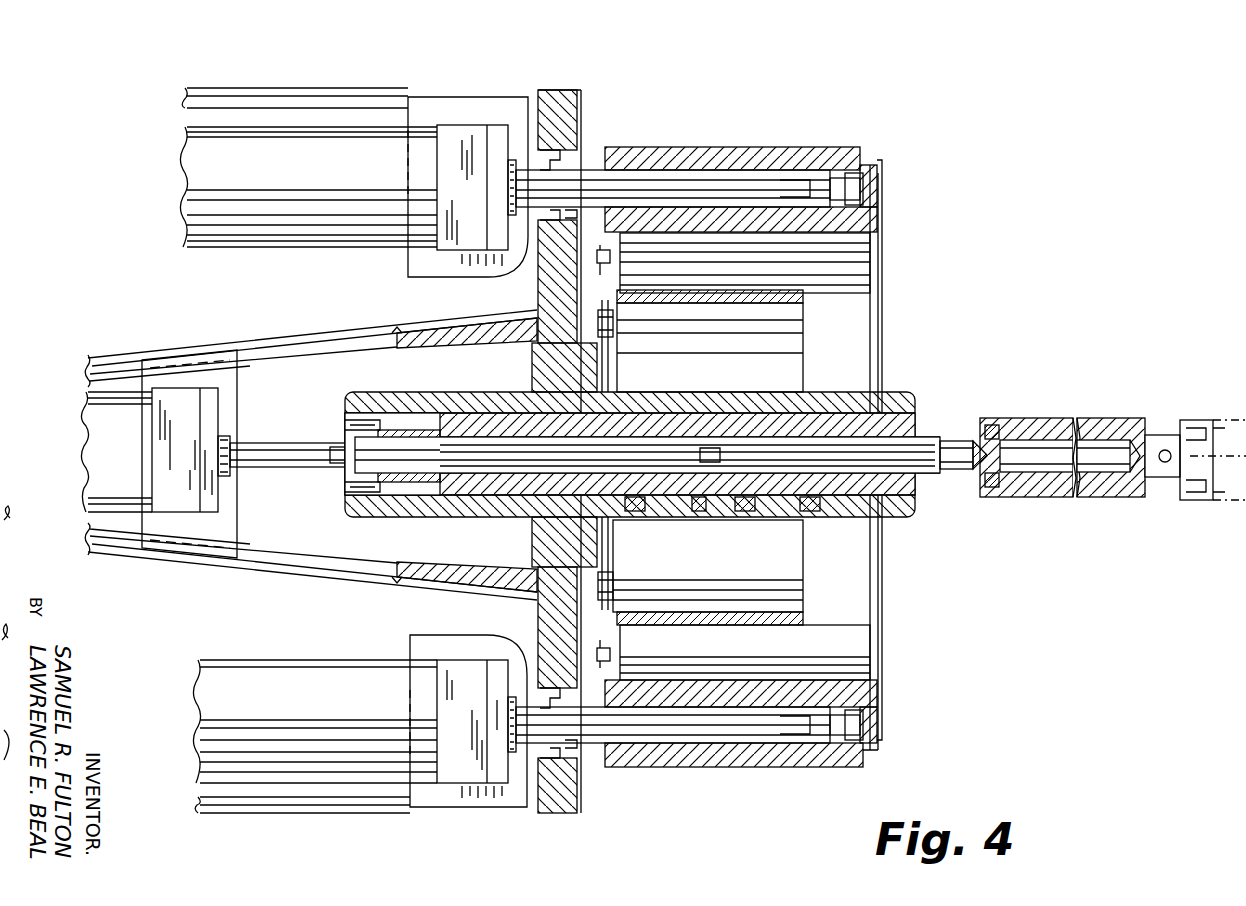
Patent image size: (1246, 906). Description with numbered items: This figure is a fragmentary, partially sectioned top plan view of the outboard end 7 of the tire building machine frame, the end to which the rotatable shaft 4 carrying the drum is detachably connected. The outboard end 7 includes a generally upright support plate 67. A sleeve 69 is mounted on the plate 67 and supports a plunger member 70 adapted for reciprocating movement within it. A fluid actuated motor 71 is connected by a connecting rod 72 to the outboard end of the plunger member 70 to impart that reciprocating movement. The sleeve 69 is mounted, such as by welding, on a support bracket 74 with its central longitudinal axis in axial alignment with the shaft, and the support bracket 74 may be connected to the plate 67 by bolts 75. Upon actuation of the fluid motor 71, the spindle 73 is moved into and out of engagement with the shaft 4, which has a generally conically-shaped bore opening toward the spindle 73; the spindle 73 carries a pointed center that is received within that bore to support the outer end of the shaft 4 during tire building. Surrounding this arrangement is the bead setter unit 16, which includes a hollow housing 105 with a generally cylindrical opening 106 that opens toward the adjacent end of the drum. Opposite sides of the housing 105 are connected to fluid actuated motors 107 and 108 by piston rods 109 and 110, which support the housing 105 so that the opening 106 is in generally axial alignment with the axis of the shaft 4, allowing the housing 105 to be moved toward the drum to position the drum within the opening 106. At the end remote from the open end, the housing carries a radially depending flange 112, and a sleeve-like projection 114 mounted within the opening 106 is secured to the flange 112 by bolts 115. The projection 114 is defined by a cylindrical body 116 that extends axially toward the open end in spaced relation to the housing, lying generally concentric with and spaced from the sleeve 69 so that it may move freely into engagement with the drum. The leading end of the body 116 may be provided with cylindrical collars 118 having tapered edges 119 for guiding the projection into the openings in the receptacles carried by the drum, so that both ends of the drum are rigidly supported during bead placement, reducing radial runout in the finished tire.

The rotatable shaft 4 is at (1127, 420).
The outboard end 7 is at (200, 303).
The bead setter unit 16 is at (708, 147).
The support plate 67 is at (560, 90).
The sleeve 69 is at (890, 395).
The plunger member 70 is at (919, 420).
The fluid actuated motor 71 is at (100, 435).
The connecting rod 72 is at (284, 452).
The spindle 73 is at (940, 478).
The support bracket 74 is at (588, 376).
The bolts 75 is at (613, 340).
The hollow housing 105 is at (770, 170).
The cylindrical opening 106 is at (880, 275).
The fluid actuated motor 107 is at (320, 757).
The fluid actuated motor 108 is at (317, 140).
The piston rod 109 is at (735, 735).
The piston rod 110 is at (788, 183).
The radially depending flange 112 is at (630, 240).
The sleeve-like projection 114 is at (733, 287).
The bolts 115 is at (598, 254).
The cylindrical body 116 is at (692, 615).
The cylindrical collars 118 is at (740, 293).
The tapered edges 119 is at (800, 626).